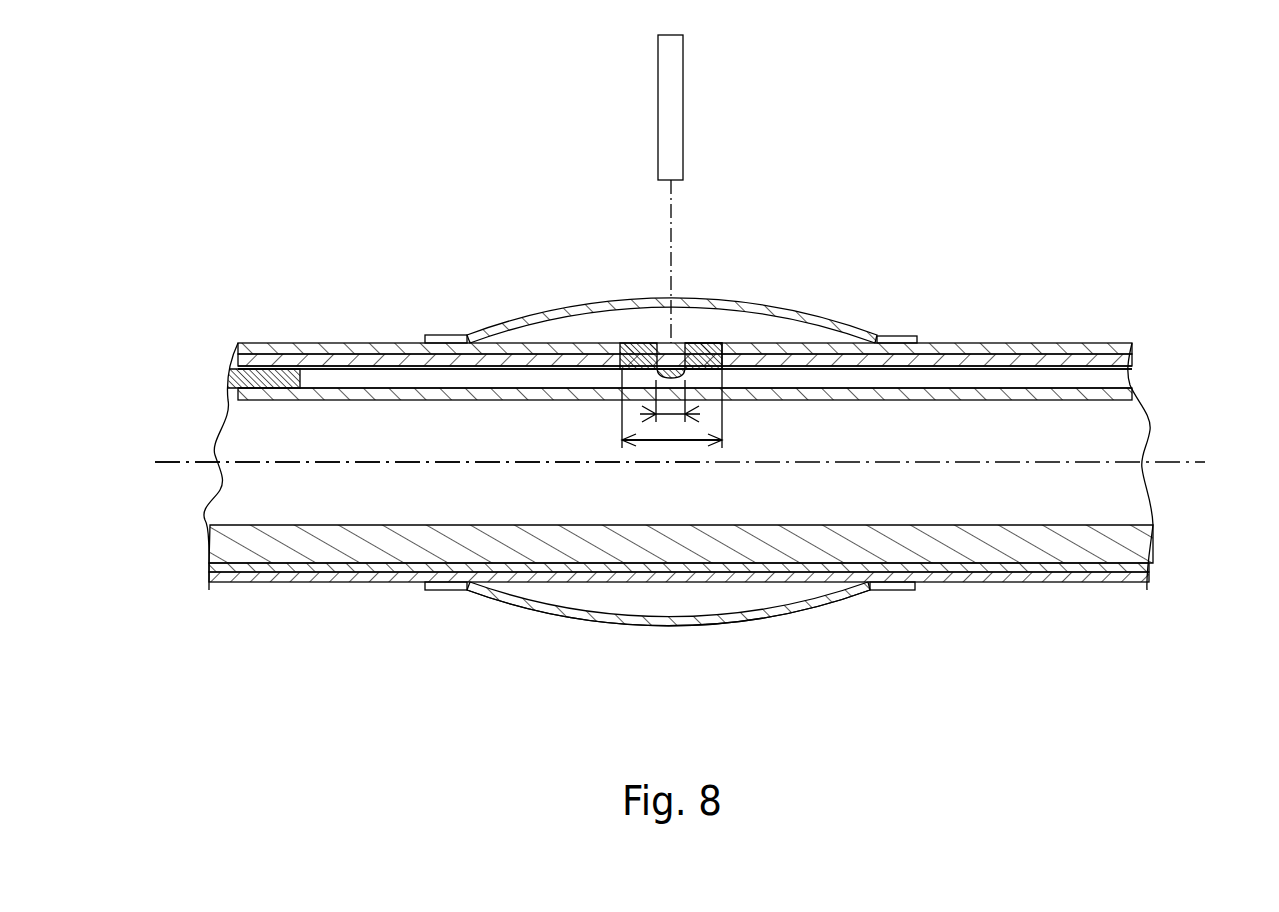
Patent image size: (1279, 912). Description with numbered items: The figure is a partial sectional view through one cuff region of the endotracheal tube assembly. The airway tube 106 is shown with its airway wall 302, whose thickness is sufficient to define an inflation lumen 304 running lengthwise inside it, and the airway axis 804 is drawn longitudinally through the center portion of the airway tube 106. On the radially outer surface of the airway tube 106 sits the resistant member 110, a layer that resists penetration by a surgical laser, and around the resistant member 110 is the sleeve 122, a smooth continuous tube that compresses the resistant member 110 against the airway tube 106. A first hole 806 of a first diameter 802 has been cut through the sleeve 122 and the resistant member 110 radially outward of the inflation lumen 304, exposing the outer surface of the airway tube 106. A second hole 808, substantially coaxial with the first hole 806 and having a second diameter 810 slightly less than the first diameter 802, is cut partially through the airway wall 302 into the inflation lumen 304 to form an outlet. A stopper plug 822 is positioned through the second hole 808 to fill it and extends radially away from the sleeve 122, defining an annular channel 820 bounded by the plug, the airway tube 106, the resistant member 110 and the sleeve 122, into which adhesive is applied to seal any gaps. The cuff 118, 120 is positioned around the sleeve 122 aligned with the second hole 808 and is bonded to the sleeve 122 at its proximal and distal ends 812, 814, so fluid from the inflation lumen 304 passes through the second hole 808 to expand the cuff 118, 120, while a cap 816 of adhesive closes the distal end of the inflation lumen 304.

The airway tube 106 is at (210, 548).
The resistant member 110 is at (514, 353).
The proximal cuff 118 is at (779, 630).
The distal cuff 120 is at (668, 608).
The sleeve 122 is at (1094, 338).
The airway wall 302 is at (1118, 548).
The inflation lumen 304 is at (1129, 377).
The first diameter 802 is at (690, 443).
The airway axis 804 is at (185, 458).
The first hole 806 is at (661, 452).
The second hole 808 is at (662, 341).
The second diameter 810 is at (592, 327).
The proximal end of cuff 812 is at (443, 335).
The distal end of cuff 814 is at (898, 337).
The cap 816 is at (221, 372).
The annular channel 820 is at (714, 341).
The stopper plug 822 is at (676, 80).